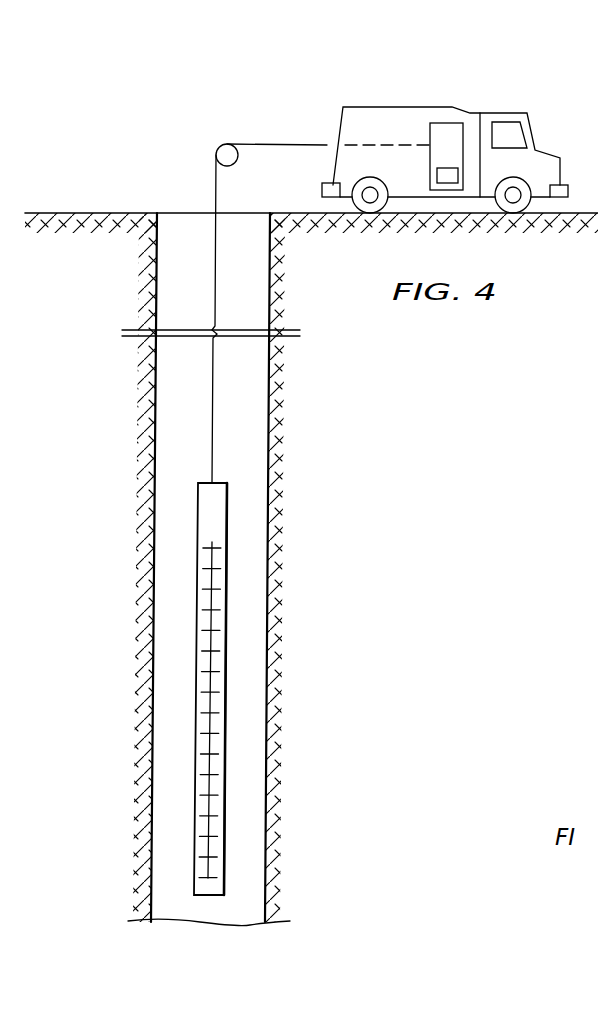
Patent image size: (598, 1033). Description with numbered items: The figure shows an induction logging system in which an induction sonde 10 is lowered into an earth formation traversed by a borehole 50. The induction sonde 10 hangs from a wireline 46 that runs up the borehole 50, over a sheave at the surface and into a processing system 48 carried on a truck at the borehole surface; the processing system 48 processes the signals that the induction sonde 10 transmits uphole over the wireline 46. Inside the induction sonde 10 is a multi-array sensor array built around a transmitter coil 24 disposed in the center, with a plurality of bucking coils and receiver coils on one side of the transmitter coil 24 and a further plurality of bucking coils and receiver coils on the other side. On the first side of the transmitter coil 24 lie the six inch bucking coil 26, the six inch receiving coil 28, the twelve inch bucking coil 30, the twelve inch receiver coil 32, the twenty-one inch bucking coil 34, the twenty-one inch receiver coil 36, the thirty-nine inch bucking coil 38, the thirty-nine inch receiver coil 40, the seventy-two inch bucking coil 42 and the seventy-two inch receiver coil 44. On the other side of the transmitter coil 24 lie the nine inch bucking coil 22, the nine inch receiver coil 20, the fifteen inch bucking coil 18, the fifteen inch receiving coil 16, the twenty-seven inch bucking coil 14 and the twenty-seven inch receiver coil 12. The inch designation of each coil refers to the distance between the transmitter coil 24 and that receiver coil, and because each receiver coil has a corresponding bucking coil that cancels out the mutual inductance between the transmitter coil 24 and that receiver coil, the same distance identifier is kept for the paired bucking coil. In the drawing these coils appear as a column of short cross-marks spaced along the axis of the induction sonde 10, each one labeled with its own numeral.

The induction sonde 10 is at (198, 498).
The 27 inch receiver coil 12 is at (222, 548).
The 27 inch bucking coil 14 is at (203, 569).
The 15 inch receiving coil 16 is at (221, 589).
The 15 inch bucking coil 18 is at (202, 610).
The 9 inch receiver coil 20 is at (221, 630).
The 9 inch bucking coil 22 is at (202, 651).
The transmitter coil 24 is at (220, 672).
The 6 inch bucking coil 26 is at (201, 692).
The 6 inch receiving coil 28 is at (220, 713).
The 12 inch bucking coil 30 is at (201, 733).
The 12 inch receiver coil 32 is at (220, 754).
The 21 inch bucking coil 34 is at (200, 775).
The 21 inch receiver coil 36 is at (219, 795).
The 39 inch bucking coil 38 is at (200, 816).
The 39 inch receiver coil 40 is at (218, 836).
The 72 inch bucking coil 42 is at (199, 857).
The 72 inch receiver coil 44 is at (218, 878).
The wireline 46 is at (282, 144).
The processing system 48 is at (448, 132).
The borehole 50 is at (172, 222).